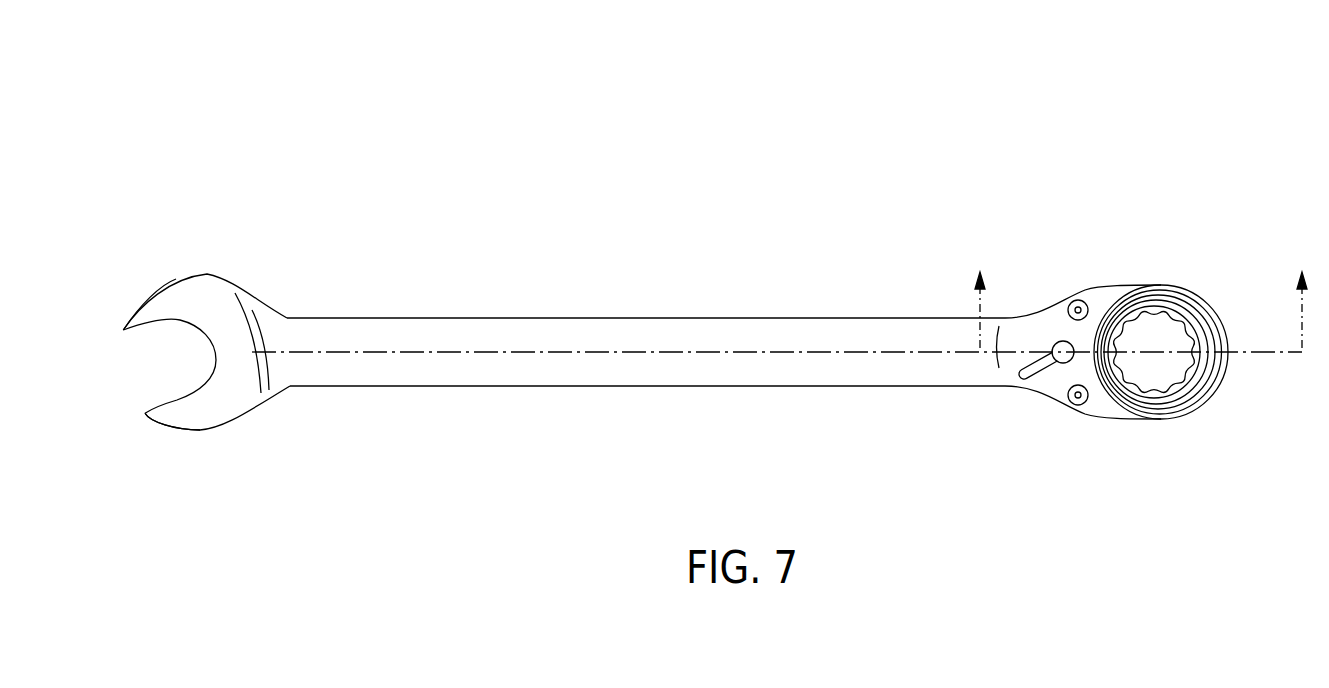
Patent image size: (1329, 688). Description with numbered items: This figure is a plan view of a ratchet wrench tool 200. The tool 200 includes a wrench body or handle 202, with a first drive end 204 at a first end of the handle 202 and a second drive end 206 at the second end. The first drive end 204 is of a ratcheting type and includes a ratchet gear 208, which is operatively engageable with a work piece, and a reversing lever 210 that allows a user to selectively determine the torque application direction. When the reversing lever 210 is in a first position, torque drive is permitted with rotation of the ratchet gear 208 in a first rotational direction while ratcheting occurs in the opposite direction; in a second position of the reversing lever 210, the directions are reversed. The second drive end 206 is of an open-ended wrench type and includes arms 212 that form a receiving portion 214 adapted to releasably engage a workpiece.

The tool 200 is at (716, 263).
The wrench body or handle 202 is at (837, 317).
The first drive end 204 is at (1113, 346).
The second drive end 206 is at (206, 360).
The ratchet gear 208 is at (1172, 400).
The reversing lever 210 is at (1032, 383).
The arms 212 is at (153, 297).
The receiving portion 214 is at (215, 370).